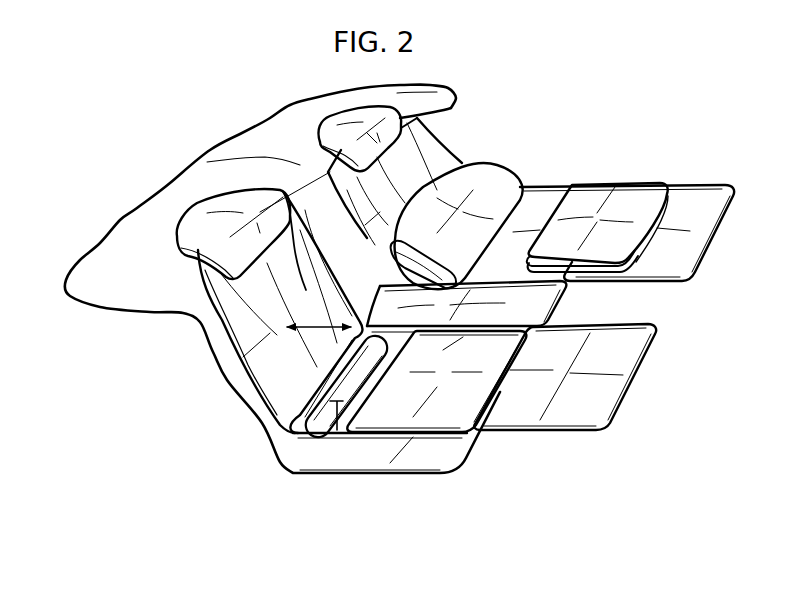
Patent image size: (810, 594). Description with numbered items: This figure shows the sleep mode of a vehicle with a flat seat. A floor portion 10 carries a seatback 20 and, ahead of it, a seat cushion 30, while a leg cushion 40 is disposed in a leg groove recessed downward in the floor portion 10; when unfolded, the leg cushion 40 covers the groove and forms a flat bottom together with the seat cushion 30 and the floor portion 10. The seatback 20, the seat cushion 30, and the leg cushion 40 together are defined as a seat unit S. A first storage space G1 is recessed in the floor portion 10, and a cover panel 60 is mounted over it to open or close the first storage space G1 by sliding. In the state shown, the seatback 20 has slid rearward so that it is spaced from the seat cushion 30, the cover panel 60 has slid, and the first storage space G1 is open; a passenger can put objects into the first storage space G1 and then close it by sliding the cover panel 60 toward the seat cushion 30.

The seat unit S is at (190, 258).
The floor portion 10 is at (637, 303).
The seatback 20 is at (294, 342).
The seat cushion 30 is at (388, 400).
The leg cushion 40 is at (510, 403).
The cover panel 60 is at (288, 403).
The first storage space G1 is at (337, 430).